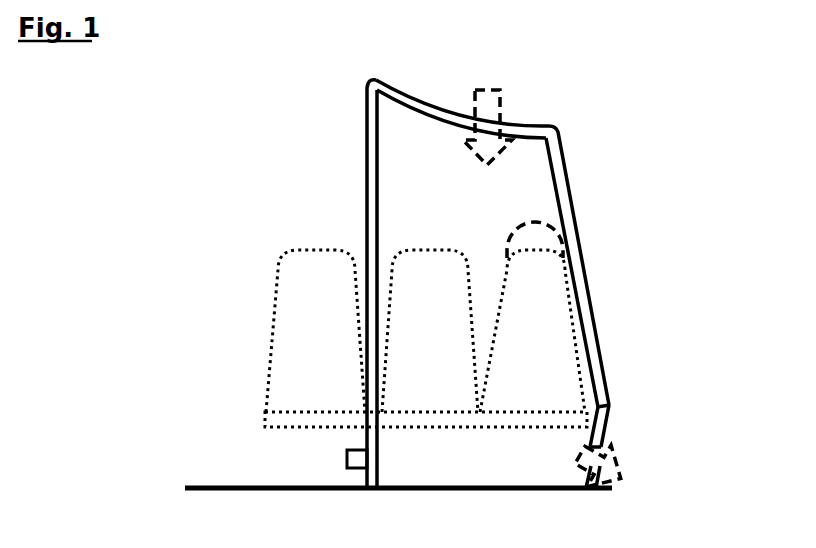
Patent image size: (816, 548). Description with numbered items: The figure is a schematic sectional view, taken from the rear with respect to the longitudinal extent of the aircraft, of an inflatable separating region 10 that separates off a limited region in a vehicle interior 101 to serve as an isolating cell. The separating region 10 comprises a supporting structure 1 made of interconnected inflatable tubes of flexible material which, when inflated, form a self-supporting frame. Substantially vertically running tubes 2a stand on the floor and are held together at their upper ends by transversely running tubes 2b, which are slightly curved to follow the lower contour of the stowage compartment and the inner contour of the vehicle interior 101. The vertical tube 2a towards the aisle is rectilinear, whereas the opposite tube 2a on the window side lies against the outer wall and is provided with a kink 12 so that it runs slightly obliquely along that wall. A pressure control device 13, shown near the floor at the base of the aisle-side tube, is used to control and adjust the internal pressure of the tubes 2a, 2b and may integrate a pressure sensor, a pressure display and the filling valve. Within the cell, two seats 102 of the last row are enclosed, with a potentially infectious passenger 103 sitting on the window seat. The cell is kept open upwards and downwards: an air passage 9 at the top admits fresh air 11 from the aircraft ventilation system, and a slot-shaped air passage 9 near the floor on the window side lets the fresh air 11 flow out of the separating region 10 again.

The supporting structure 1 is at (362, 107).
The vertically running tubes 2a is at (462, 284).
The transversely running tubes 2b is at (412, 101).
The air passage 9 is at (575, 253).
The inflatable separating region 10 is at (268, 102).
The fresh air 11 is at (500, 106).
The kinks 12 is at (610, 408).
The pressure control device 13 is at (347, 466).
The vehicle interior 101 is at (212, 402).
The seats 102 is at (276, 297).
The potentially infectious passenger 103 is at (510, 250).